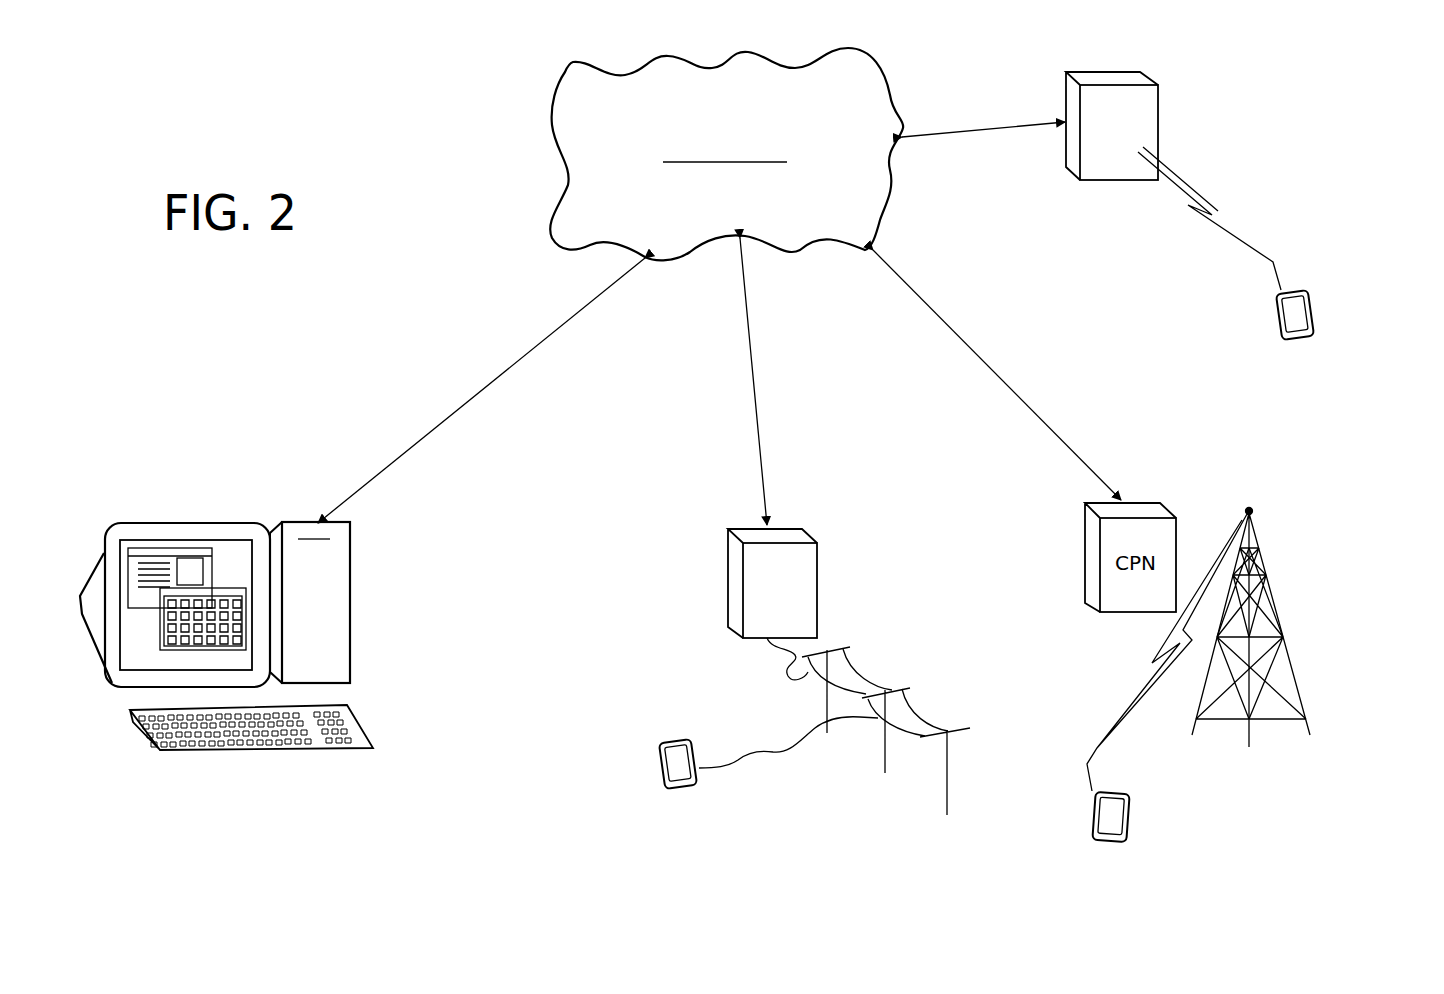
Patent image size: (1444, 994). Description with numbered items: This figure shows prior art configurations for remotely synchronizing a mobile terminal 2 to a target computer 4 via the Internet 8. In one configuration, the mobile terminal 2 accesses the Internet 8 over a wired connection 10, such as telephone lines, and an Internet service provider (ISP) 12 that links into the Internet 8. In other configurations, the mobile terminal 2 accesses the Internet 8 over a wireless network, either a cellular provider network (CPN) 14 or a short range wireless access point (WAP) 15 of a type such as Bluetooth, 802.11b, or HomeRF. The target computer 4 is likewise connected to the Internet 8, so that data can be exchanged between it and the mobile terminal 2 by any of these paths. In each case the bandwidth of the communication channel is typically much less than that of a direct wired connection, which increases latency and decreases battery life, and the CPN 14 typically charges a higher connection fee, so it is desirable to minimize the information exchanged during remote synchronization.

The mobile terminal 2 is at (1330, 309).
The target computer 4 is at (372, 518).
The Internet 8 is at (908, 90).
The wired connection 10 is at (785, 745).
The Internet service provider (ISP) 12 is at (820, 518).
The cellular provider network (CPN) 14 is at (1207, 482).
The short range wireless access point (WAP) 15 is at (1192, 110).